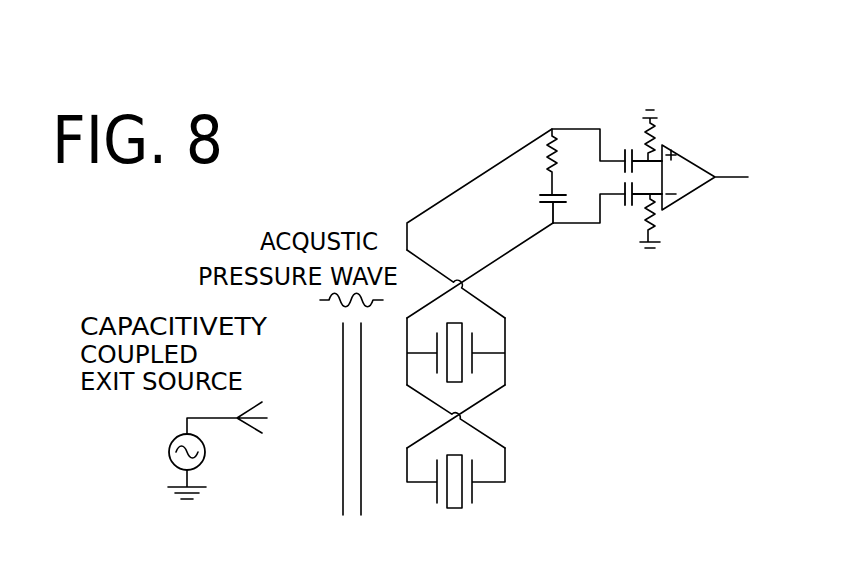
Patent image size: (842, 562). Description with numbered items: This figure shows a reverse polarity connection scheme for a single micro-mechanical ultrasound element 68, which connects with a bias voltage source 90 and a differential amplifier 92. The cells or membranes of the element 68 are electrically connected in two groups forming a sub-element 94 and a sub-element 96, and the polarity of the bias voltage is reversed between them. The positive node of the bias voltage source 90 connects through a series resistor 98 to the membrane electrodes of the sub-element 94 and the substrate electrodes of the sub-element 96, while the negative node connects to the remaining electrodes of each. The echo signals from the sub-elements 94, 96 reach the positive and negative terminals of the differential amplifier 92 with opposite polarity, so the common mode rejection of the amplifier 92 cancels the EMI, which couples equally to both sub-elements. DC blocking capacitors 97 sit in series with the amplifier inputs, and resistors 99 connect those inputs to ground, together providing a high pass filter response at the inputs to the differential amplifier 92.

The micro-mechanical ultrasound element 68 is at (510, 409).
The bias voltage source 90 is at (572, 200).
The differential amplifier 92 is at (694, 200).
The sub-element 94 is at (474, 315).
The sub-element 96 is at (531, 461).
The DC blocking capacitors 97 is at (626, 149).
The series resistor 98 is at (563, 153).
The resistors 99 is at (651, 112).